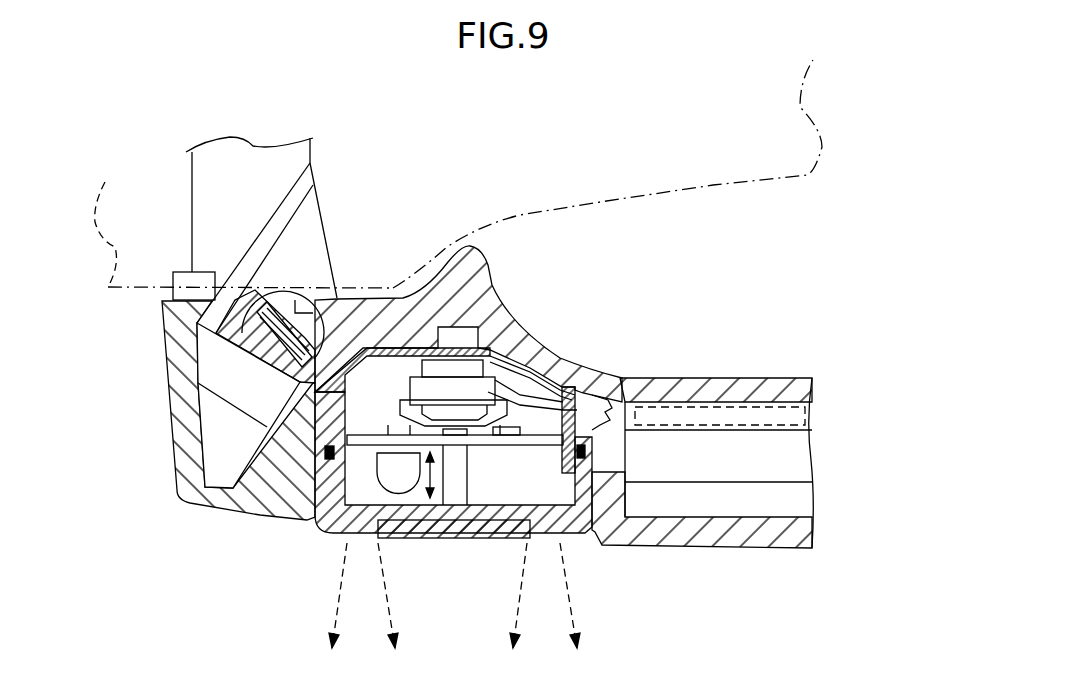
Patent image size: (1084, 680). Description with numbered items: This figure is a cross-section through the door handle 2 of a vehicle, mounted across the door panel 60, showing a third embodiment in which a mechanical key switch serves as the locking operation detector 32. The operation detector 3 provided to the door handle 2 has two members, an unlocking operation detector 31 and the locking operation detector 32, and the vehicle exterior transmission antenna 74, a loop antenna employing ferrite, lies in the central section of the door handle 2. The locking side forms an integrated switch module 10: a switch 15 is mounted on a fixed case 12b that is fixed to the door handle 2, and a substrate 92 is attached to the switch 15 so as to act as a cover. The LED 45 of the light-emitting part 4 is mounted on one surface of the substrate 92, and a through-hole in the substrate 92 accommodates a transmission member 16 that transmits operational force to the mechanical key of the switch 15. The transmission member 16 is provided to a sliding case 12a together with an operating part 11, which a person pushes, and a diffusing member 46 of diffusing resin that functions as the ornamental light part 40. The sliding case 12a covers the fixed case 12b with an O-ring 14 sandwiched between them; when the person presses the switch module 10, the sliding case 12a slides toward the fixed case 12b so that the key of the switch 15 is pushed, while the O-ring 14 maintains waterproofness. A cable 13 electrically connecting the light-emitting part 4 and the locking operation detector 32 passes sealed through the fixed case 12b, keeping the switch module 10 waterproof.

The door handle 2 is at (771, 550).
The operation detector 3 is at (738, 430).
The light-emitting part 4 is at (381, 549).
The switch module 10 is at (489, 437).
The operating part 11 is at (437, 532).
The sliding case 12a is at (322, 453).
The fixed case 12b is at (527, 380).
The cable 13 is at (598, 400).
The O-ring 14 is at (590, 453).
The switch 15 is at (418, 383).
The transmission member 16 is at (463, 478).
The unlocking operation detector 31 is at (750, 405).
The locking operation detector 32 is at (430, 318).
The ornamental light part 40 is at (540, 543).
The LED 45 is at (385, 472).
The diffusing member 46 is at (363, 540).
The door panel 60 is at (148, 288).
The vehicle exterior transmission antenna 74 is at (786, 467).
The substrate 92 is at (498, 442).